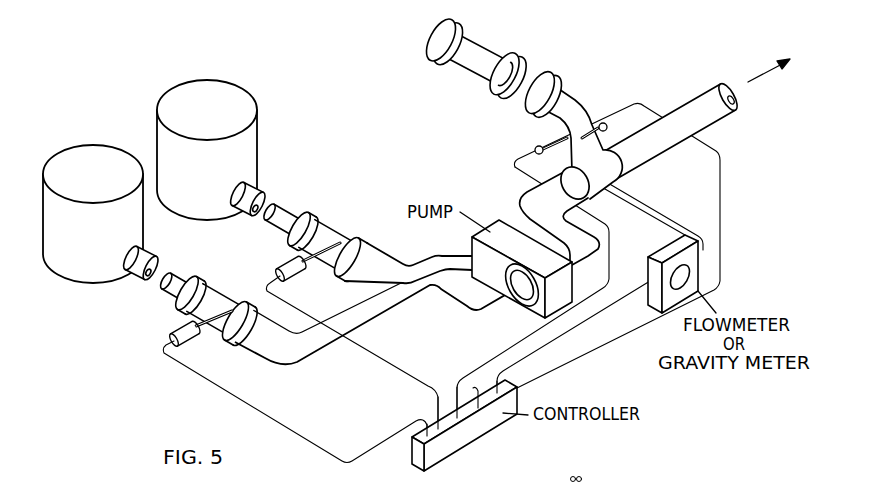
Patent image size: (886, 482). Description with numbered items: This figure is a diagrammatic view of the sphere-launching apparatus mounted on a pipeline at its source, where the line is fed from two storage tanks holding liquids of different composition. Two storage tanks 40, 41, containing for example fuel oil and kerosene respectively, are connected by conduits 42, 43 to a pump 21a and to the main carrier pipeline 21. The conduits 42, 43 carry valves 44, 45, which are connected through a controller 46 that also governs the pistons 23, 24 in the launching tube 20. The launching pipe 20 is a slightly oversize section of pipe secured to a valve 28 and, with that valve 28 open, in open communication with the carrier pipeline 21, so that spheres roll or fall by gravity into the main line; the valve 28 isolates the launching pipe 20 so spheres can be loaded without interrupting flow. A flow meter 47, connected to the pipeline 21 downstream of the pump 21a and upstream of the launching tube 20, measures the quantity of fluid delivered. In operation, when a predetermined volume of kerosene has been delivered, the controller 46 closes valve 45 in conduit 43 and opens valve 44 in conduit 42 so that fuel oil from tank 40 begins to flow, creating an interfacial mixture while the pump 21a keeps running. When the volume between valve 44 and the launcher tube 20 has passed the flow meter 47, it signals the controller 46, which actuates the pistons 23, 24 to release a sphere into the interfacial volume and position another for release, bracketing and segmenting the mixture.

The launching pipe 20 is at (467, 37).
The carrier pipeline 21 is at (702, 103).
The pump 21a is at (478, 248).
The piston 23 is at (593, 123).
The piston 24 is at (550, 140).
The valve 28 is at (530, 77).
The storage tank 40 is at (83, 150).
The storage tank 41 is at (175, 90).
The conduit 42 is at (147, 253).
The conduit 43 is at (257, 190).
The valve 44 is at (207, 295).
The valve 45 is at (320, 227).
The controller 46 is at (412, 455).
The flow meter 47 is at (653, 293).